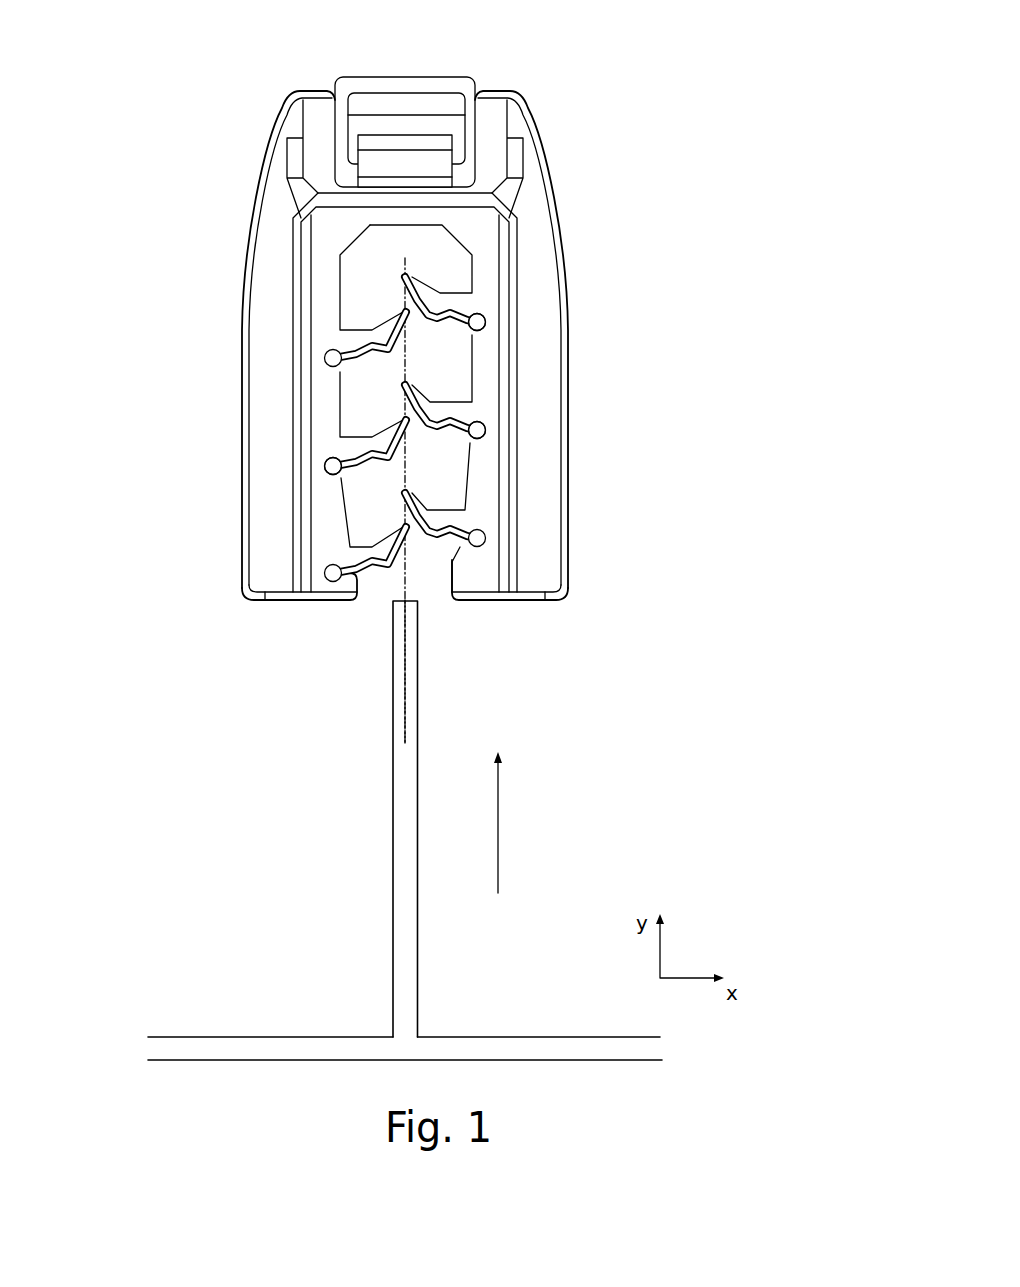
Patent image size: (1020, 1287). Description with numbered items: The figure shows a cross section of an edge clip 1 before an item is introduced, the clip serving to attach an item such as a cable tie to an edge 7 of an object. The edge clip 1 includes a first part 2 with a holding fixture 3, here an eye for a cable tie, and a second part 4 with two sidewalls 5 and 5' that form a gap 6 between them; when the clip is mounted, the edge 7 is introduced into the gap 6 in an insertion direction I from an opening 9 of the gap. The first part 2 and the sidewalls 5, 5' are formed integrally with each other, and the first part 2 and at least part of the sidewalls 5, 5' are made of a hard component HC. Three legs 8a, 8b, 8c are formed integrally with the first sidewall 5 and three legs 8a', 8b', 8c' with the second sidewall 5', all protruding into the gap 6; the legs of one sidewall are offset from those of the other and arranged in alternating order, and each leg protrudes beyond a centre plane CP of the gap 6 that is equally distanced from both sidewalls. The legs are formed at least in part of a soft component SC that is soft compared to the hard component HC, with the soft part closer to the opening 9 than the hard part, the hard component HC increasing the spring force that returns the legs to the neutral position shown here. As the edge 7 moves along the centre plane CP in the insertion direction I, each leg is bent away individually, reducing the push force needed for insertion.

The edge clip 1 is at (568, 135).
The first part 2 is at (240, 114).
The holding fixture 3 is at (398, 120).
The second part 4 is at (205, 525).
The first sidewall 5 is at (302, 642).
The second sidewall 5' is at (507, 641).
The gap 6 is at (414, 253).
The edge 7 is at (412, 652).
The leg 8a is at (271, 554).
The leg 8b is at (271, 437).
The leg 8c is at (271, 331).
The leg 8a' is at (539, 517).
The leg 8b' is at (539, 412).
The leg 8c' is at (538, 273).
The opening 9 is at (377, 611).
The centre plane CP is at (402, 680).
The hard component HC is at (492, 363).
The soft component SC is at (328, 464).
The insertion direction I is at (498, 800).